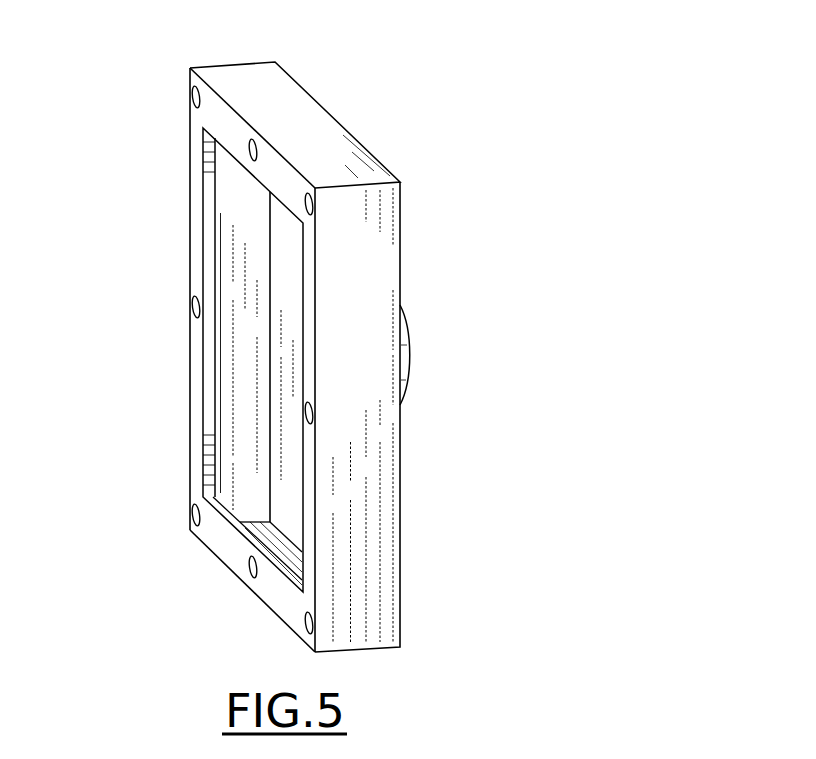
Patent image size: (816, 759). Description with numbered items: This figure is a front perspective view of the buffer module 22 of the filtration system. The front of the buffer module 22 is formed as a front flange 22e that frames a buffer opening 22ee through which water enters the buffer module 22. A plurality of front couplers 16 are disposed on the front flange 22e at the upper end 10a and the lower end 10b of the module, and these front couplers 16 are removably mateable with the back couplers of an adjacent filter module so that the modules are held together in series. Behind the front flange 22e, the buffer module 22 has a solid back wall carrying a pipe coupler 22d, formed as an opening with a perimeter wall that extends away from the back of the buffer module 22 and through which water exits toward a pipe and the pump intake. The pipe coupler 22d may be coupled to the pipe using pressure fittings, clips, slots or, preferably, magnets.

The upper end 10a is at (170, 91).
The lower end 10b is at (150, 529).
The front couplers 16 is at (254, 143).
The buffer module 22 is at (385, 573).
The pipe coupler 22d is at (406, 360).
The front flange 22e is at (191, 418).
The buffer opening 22ee is at (214, 327).